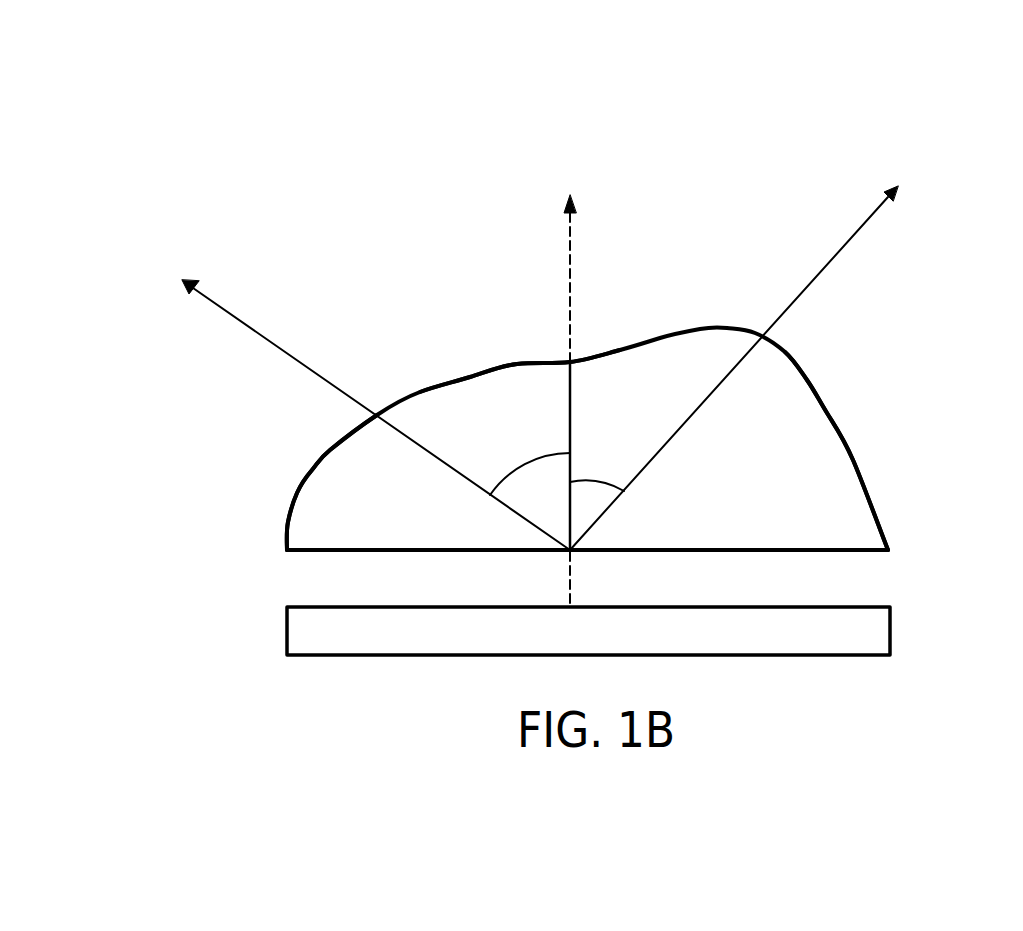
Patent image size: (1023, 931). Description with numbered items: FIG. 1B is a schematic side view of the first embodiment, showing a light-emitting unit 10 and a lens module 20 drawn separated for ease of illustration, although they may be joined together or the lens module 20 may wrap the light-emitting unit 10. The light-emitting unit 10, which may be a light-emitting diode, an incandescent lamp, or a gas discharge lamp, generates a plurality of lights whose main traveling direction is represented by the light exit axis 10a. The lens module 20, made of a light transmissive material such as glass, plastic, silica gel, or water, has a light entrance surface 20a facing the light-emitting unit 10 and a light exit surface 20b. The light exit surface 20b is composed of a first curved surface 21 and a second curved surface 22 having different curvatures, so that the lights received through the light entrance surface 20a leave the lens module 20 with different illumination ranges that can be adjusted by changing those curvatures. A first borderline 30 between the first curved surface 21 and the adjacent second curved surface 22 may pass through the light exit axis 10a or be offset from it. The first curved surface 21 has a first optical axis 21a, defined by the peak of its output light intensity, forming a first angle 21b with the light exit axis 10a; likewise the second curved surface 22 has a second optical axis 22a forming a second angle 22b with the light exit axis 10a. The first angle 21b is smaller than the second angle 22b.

The light-emitting unit 10 is at (867, 607).
The light exit axis 10a is at (563, 382).
The lens module 20 is at (808, 378).
The light entrance surface 20a is at (327, 552).
The light exit surface 20b is at (517, 363).
The first curved surface 21 is at (820, 467).
The first optical axis 21a is at (749, 353).
The first angle 21b is at (620, 490).
The second curved surface 22 is at (333, 500).
The second optical axis 22a is at (353, 400).
The second angle 22b is at (533, 465).
The first borderline 30 is at (570, 393).